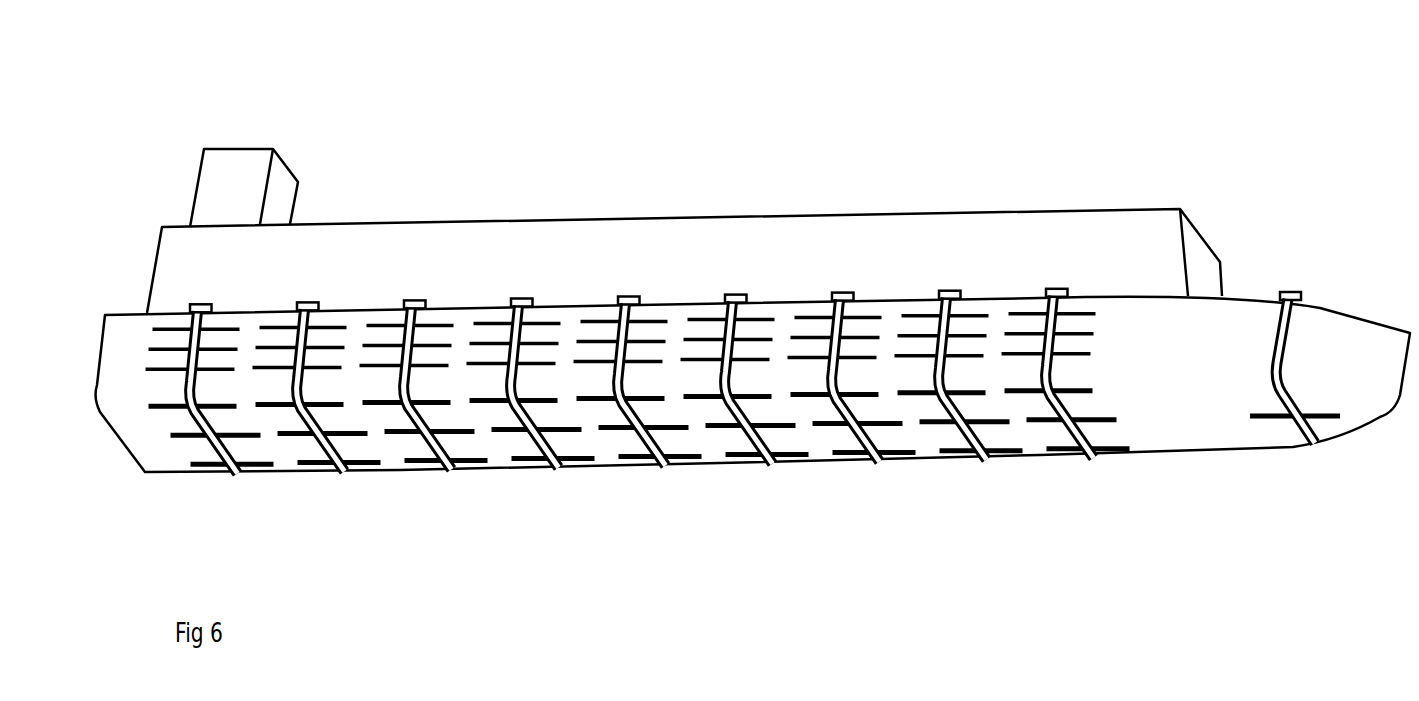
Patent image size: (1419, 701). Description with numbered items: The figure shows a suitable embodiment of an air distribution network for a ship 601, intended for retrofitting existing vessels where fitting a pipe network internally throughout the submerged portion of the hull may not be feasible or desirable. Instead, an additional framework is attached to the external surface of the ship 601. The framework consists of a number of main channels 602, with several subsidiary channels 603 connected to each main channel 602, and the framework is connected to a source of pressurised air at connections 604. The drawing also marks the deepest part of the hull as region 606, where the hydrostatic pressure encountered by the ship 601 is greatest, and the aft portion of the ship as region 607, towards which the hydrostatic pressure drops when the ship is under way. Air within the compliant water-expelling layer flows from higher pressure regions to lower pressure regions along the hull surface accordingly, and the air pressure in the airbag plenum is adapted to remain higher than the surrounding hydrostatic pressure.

The ship 601 is at (977, 265).
The main channels 602 is at (187, 389).
The subsidiary channels 603 is at (602, 428).
The connections 604 is at (413, 300).
The region 606 is at (1357, 410).
The region 607 is at (120, 327).